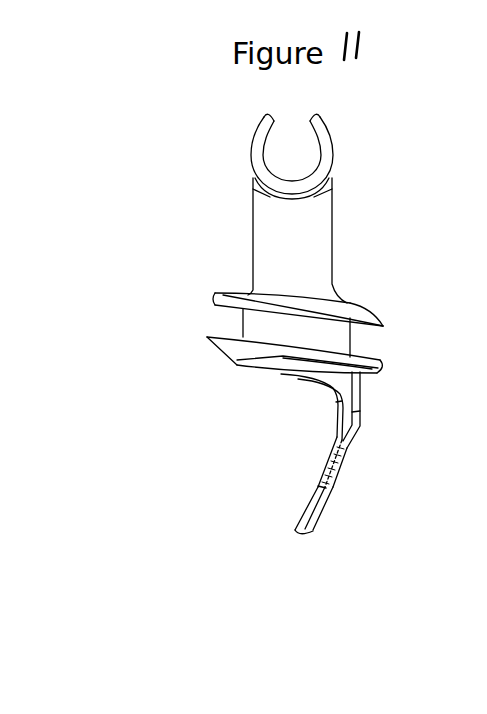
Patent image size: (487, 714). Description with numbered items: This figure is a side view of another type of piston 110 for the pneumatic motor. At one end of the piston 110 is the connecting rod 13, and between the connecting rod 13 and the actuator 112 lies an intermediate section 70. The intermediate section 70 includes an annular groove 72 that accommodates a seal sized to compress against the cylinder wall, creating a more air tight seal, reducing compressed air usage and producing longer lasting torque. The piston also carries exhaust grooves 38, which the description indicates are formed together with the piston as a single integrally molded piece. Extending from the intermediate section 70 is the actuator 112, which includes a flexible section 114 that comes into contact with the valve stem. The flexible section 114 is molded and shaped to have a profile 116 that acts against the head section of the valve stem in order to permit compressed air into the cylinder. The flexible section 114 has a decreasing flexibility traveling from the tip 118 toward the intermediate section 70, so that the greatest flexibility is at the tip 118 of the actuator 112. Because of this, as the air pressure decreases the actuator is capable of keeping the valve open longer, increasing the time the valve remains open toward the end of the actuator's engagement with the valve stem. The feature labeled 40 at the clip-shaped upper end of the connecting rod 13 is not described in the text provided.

The piston 110 is at (452, 126).
The C-shaped clamp ring 40 is at (318, 124).
The connecting rod 13 is at (258, 227).
The intermediate section 70 is at (123, 248).
The annular groove 72 is at (220, 316).
The exhaust grooves 38 is at (410, 290).
The actuator 112 is at (362, 403).
The flexible section 114 is at (414, 493).
The profile 116 is at (318, 495).
The tip 118 is at (298, 533).